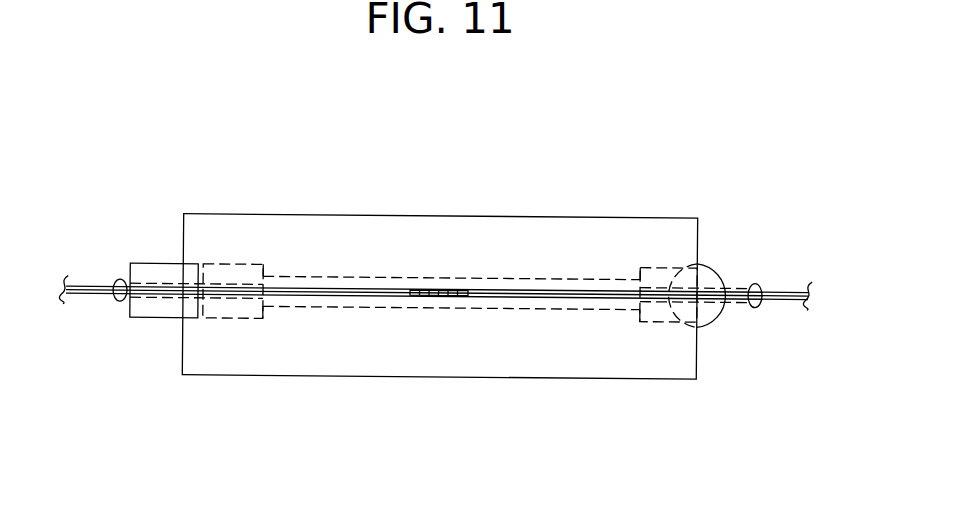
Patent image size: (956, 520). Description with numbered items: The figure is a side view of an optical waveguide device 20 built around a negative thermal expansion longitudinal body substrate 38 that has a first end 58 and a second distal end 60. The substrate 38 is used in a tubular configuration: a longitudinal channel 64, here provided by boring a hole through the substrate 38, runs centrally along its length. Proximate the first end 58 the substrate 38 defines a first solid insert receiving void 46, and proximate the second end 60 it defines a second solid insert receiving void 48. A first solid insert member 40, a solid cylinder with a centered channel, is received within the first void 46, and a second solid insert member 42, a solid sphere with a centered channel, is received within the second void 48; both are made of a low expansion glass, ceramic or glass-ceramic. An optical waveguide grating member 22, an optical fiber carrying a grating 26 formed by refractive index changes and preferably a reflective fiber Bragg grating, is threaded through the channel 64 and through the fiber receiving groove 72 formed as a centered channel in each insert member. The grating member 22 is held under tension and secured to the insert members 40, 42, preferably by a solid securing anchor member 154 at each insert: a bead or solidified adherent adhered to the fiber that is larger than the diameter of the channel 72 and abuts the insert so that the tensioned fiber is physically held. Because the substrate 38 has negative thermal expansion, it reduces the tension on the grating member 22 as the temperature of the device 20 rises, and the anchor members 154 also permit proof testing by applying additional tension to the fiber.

The optical waveguide device 20 is at (232, 150).
The optical waveguide grating member 22 is at (517, 292).
The grating 26 is at (443, 284).
The negative thermal expansion longitudinal body substrate 38 is at (337, 377).
The first solid insert member 40 is at (157, 319).
The second solid insert member 42 is at (715, 335).
The first solid insert receiving void 46 is at (217, 333).
The second solid insert receiving void 48 is at (658, 333).
The first end 58 is at (108, 334).
The second distal end 60 is at (748, 348).
The longitudinal channel 64 is at (350, 270).
The fiber receiving groove 72 is at (158, 287).
The solid securing anchor member 154 is at (118, 279).